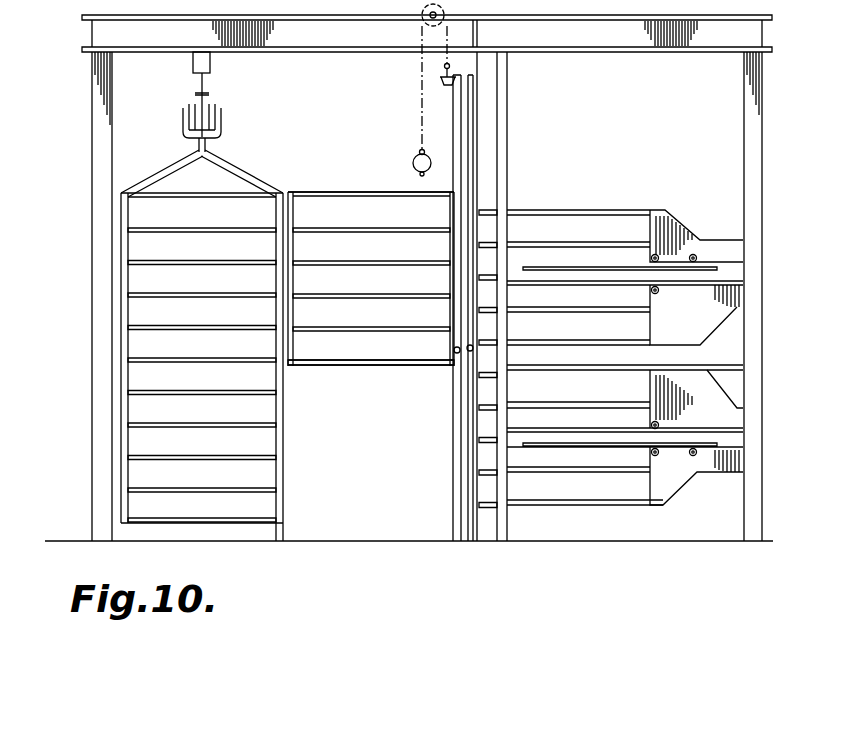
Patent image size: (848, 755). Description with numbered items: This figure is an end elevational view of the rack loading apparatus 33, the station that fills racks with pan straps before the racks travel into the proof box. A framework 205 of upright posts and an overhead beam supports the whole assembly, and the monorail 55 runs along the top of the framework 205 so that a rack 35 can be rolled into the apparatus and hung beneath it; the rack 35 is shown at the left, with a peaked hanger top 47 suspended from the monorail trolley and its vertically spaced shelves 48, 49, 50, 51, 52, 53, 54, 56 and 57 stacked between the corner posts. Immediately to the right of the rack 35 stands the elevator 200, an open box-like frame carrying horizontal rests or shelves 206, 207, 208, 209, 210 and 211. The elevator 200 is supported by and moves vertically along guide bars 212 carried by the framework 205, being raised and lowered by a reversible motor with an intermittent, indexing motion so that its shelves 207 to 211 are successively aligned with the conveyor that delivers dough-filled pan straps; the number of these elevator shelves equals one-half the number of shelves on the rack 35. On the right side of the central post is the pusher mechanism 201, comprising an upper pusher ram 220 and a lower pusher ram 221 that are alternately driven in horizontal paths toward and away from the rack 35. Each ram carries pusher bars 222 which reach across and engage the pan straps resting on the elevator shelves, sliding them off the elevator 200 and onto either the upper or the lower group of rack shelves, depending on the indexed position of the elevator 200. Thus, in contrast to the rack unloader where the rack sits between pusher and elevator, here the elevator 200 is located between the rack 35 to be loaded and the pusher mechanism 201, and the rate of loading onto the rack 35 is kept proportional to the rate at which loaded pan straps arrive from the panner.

The rack loading apparatus 33 is at (82, 207).
The framework 205 is at (94, 82).
The monorail 55 is at (210, 93).
The rack 35 is at (284, 490).
The top roof of shelf stack 47 is at (207, 179).
The shelf 48 is at (262, 214).
The shelf 49 is at (186, 246).
The shelf 50 is at (244, 298).
The shelf 51 is at (182, 312).
The shelf 52 is at (229, 347).
The shelf 53 is at (185, 390).
The shelf 54 is at (259, 410).
The shelf 56 is at (246, 492).
The shelf 57 is at (190, 506).
The elevator 200 is at (383, 373).
The horizontal rest or shelf 206 is at (392, 176).
The shelf 207 is at (441, 215).
The shelf 208 is at (360, 247).
The shelf 209 is at (420, 298).
The shelf 210 is at (355, 332).
The shelf 211 is at (391, 367).
The guide bars 212 is at (460, 458).
The pusher mechanism 201 is at (655, 190).
The upper pusher ram 220 is at (668, 212).
The lower pusher ram 221 is at (676, 483).
The pusher bars 222 is at (590, 250).